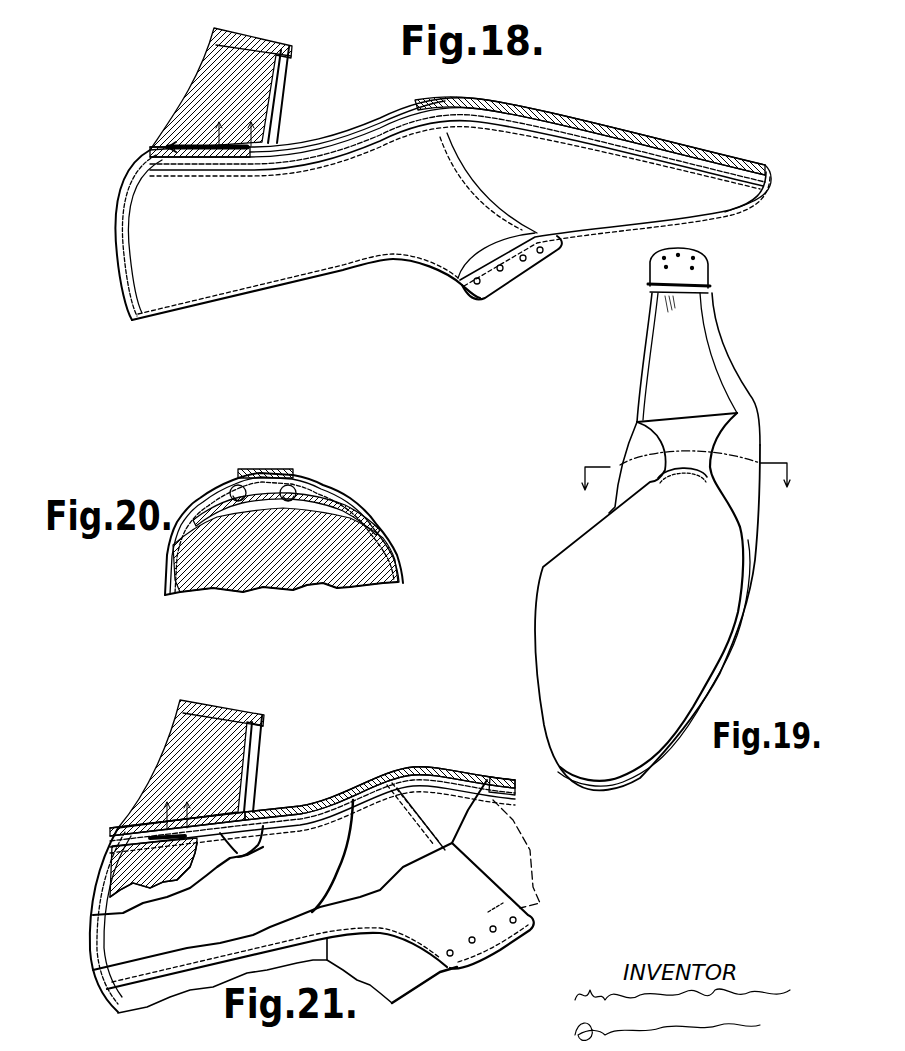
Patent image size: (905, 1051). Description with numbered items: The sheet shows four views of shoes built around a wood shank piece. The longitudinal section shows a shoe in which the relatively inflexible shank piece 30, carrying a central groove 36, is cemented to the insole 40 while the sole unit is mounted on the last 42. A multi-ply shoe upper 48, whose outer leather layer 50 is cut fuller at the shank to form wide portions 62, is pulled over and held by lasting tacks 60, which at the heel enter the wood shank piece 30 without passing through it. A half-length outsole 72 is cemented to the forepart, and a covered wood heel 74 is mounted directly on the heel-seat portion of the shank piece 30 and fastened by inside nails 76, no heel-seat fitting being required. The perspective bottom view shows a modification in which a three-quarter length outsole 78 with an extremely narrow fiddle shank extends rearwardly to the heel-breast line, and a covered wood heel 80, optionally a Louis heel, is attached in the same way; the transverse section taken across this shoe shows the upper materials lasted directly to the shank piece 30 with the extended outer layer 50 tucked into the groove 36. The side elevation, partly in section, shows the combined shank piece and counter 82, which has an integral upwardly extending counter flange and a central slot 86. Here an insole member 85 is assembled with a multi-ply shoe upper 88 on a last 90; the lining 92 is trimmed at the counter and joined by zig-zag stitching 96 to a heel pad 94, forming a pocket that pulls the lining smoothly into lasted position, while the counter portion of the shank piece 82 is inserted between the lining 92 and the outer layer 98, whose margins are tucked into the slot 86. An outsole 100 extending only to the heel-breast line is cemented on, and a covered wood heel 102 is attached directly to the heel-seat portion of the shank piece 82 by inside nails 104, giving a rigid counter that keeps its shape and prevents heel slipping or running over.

In FIG. 18, the shank piece 30 is at (152, 151).
In FIG. 20, the shank piece 30 is at (307, 489).
In FIG. 18, the groove 36 is at (348, 163).
In FIG. 20, the groove 36 is at (340, 510).
In FIG. 20, the insole 40 is at (167, 547).
In FIG. 20, the last 42 is at (367, 575).
In FIG. 18, the multi-ply shoe upper 48 is at (117, 203).
In FIG. 20, the outer leather layer 50 is at (400, 556).
In FIG. 18, the lasting tacks 60 is at (200, 146).
In FIG. 18, the wide portions 62 is at (311, 143).
In FIG. 18, the half-length outsole 72 is at (605, 125).
In FIG. 18, the covered wood heel 74 is at (237, 50).
In FIG. 18, the inside nails 76 is at (203, 123).
In FIG. 19, the outsole 78 is at (678, 661).
In FIG. 20, the outsole 78 is at (260, 470).
In FIG. 19, the covered wood heel 80 is at (727, 357).
In FIG. 21, the shank piece 82 is at (138, 826).
In FIG. 21, the insole member 85 is at (110, 866).
In FIG. 21, the central slot 86 is at (270, 812).
In FIG. 21, the multi-ply shoe upper 88 is at (500, 920).
In FIG. 21, the last 90 is at (413, 973).
In FIG. 21, the lining 92 is at (132, 893).
In FIG. 21, the heel pad 94 is at (181, 877).
In FIG. 21, the zig-zag stitching 96 is at (238, 855).
In FIG. 21, the outer layer 98 is at (90, 928).
In FIG. 21, the outsole 100 is at (493, 780).
In FIG. 21, the covered wood heel 102 is at (180, 715).
In FIG. 21, the inside nails 104 is at (222, 808).